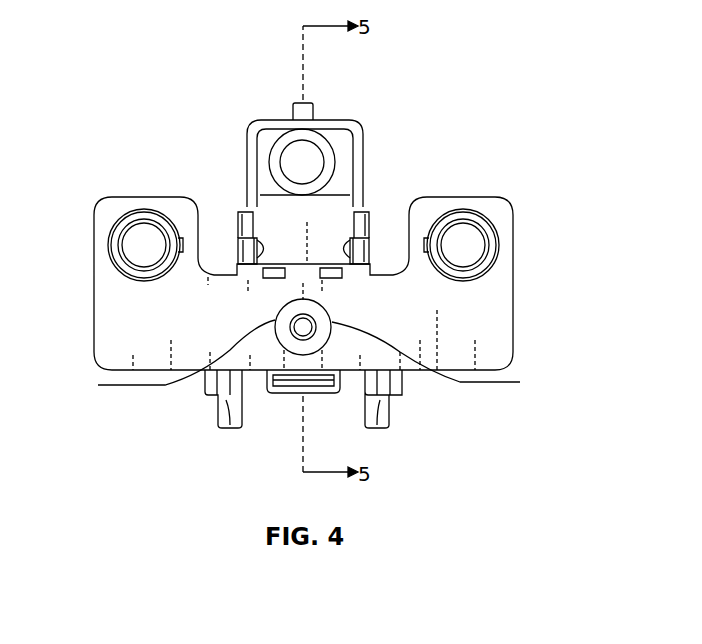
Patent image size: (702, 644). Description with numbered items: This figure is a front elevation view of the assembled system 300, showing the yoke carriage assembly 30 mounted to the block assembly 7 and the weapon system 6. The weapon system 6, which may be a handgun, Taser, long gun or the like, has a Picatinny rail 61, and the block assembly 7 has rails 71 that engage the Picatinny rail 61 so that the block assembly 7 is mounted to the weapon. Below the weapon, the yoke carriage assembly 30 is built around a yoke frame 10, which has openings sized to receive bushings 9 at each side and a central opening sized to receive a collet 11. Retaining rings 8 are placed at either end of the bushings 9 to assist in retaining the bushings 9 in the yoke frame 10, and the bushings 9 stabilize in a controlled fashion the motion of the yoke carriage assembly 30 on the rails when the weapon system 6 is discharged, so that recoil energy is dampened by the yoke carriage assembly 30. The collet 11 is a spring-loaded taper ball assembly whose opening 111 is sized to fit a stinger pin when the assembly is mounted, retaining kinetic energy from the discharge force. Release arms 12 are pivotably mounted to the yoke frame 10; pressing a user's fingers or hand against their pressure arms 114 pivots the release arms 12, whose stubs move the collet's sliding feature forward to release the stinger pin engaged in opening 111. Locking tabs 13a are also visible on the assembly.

The system 300 is at (488, 88).
The yoke carriage assembly 30 is at (508, 151).
The block assembly 7 is at (258, 428).
The yoke frame 10 is at (513, 235).
The collet 11 is at (291, 359).
The opening 111 is at (424, 357).
The retaining rings 8 is at (110, 244).
The bushings 9 is at (150, 228).
The weapon system 6 is at (380, 132).
The rails 71 is at (236, 250).
The Picatinny rail 61 is at (264, 207).
The locking tab 13a is at (265, 272).
The release arms 12 is at (215, 398).
The pressure arms 114 is at (222, 425).